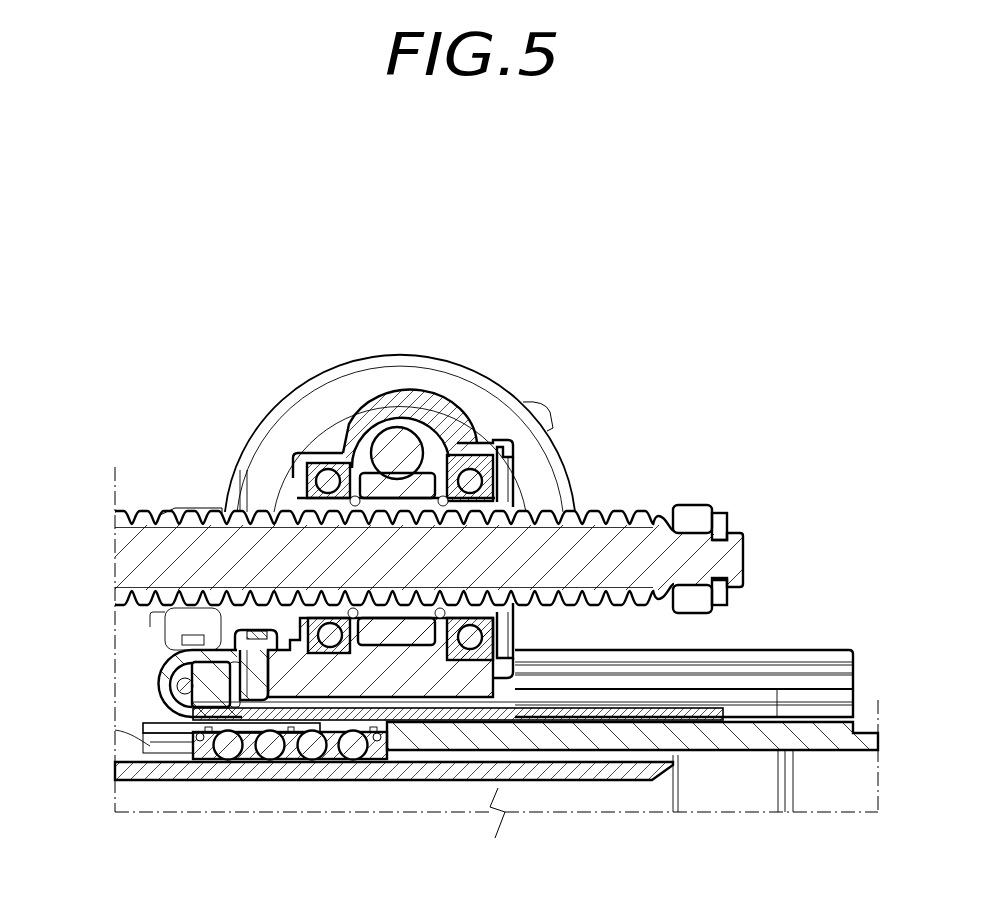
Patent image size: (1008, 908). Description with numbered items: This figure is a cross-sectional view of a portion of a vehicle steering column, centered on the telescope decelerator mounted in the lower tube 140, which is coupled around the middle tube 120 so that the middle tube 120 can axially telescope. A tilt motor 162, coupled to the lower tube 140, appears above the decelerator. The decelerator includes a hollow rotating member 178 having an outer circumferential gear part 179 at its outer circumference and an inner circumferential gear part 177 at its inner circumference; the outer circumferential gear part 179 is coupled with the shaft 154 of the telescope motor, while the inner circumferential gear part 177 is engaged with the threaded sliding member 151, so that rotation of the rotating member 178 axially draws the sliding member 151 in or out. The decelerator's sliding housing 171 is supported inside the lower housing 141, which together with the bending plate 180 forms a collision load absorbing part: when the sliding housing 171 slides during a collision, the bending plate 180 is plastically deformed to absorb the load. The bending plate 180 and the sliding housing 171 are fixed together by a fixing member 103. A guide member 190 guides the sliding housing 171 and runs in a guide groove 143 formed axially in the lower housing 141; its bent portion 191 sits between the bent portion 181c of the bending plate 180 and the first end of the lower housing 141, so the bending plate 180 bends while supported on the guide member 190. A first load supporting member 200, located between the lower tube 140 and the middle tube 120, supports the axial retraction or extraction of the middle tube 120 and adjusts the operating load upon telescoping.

The fixing member 103 is at (228, 750).
The middle tube 120 is at (437, 767).
The lower tube 140 is at (712, 742).
The lower housing 141 is at (832, 653).
The guide groove 143 is at (777, 683).
The sliding member 151 is at (617, 540).
The shaft 154 is at (398, 442).
The tilt motor 162 is at (473, 360).
The sliding housing 171 is at (317, 688).
The inner circumferential gear part 177 is at (307, 460).
The rotating member 178 is at (288, 323).
The outer circumferential gear part 179 is at (370, 440).
The bending plate 180 is at (363, 713).
The bent portion 181c is at (165, 683).
The guide member 190 is at (585, 697).
The bent portion 191 is at (186, 688).
The first load supporting member 200 is at (257, 670).